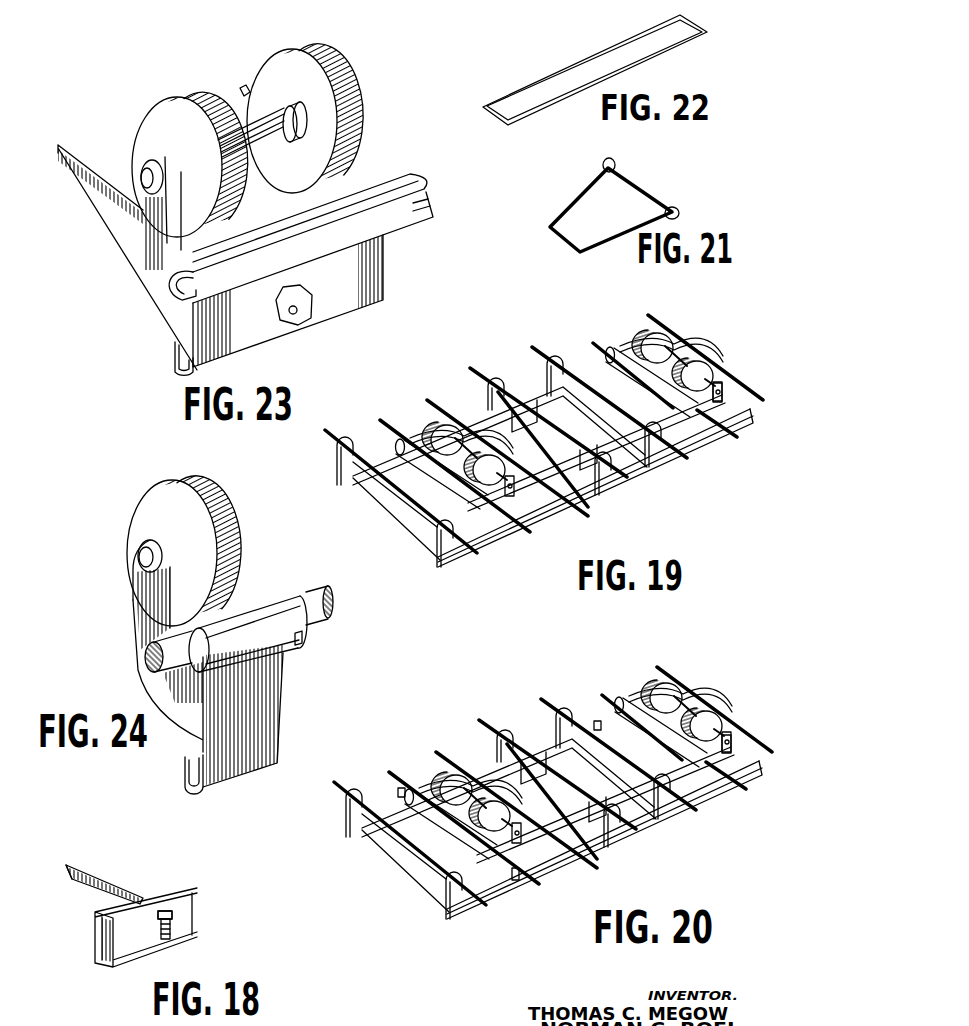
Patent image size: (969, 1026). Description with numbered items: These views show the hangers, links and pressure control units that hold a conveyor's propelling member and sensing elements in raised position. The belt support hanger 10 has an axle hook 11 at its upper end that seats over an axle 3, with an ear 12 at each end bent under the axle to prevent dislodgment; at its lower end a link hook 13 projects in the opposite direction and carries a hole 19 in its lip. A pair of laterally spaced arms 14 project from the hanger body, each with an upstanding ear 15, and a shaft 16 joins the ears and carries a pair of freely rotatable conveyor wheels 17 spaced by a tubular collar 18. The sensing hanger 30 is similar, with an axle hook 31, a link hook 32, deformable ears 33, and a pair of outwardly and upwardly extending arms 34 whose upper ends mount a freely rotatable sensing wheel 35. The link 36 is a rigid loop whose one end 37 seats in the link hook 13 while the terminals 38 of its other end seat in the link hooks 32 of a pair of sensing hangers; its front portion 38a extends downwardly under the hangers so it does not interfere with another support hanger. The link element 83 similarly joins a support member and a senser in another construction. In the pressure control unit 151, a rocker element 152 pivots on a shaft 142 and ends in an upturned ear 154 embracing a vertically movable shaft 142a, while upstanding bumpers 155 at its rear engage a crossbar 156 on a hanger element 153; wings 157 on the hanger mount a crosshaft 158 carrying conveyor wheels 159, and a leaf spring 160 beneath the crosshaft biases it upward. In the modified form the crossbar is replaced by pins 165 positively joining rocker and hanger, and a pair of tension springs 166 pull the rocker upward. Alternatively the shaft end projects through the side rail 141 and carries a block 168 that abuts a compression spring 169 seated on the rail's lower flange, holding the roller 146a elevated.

In FIG. 23, the support hanger 10 is at (170, 324).
In FIG. 23, the axle hook 11 is at (267, 233).
In FIG. 23, the ear 12 is at (188, 298).
In FIG. 23, the link hook 13 is at (178, 358).
In FIG. 23, the arm 14 is at (98, 208).
In FIG. 23, the upstanding ear 15 is at (162, 218).
In FIG. 23, the shaft 16 is at (137, 170).
In FIG. 23, the conveyor wheel 17 is at (202, 110).
In FIG. 23, the tubular collar 18 is at (273, 140).
In FIG. 23, the hole 19 is at (297, 313).
In FIG. 22, the link element 83 is at (570, 58).
In FIG. 21, the link 36 is at (573, 202).
In FIG. 21, the end 37 is at (550, 232).
In FIG. 21, the terminal 38 is at (612, 160).
In FIG. 21, the front portion 38a is at (633, 187).
In FIG. 24, the sensing hanger 30 is at (121, 625).
In FIG. 24, the axle hook 31 is at (270, 602).
In FIG. 24, the axle 3 is at (326, 612).
In FIG. 24, the deformable ear 33 is at (303, 638).
In FIG. 24, the arm 34 is at (140, 650).
In FIG. 24, the sensing wheel 35 is at (150, 493).
In FIG. 24, the link hook 32 is at (190, 790).
In FIG. 18, the side rail 141 is at (173, 892).
In FIG. 18, the roller 146a is at (123, 883).
In FIG. 18, the vertically movable shaft 142a is at (180, 913).
In FIG. 19, the vertically movable shaft 142a is at (475, 553).
In FIG. 20, the vertically movable shaft 142a is at (410, 819).
In FIG. 19, the shaft 142 is at (627, 477).
In FIG. 20, the shaft 142 is at (563, 793).
In FIG. 18, the block 168 is at (157, 918).
In FIG. 18, the compression spring 169 is at (178, 927).
In FIG. 19, the pressure control unit 151 is at (604, 502).
In FIG. 20, the pressure control unit 151 is at (560, 825).
In FIG. 19, the rocker element 152 is at (540, 512).
In FIG. 20, the rocker element 152 is at (604, 841).
In FIG. 19, the hanger element 153 is at (387, 447).
In FIG. 20, the hanger element 153 is at (604, 840).
In FIG. 19, the upturned ear 154 is at (437, 532).
In FIG. 19, the bumper 155 is at (605, 393).
In FIG. 19, the crossbar 156 is at (607, 385).
In FIG. 19, the wing 157 is at (733, 368).
In FIG. 20, the wing 157 is at (592, 781).
In FIG. 19, the crosshaft 158 is at (720, 353).
In FIG. 20, the crosshaft 158 is at (675, 712).
In FIG. 19, the conveyor wheel 159 is at (688, 345).
In FIG. 20, the conveyor wheel 159 is at (723, 707).
In FIG. 19, the leaf spring 160 is at (713, 340).
In FIG. 20, the pin 165 is at (482, 762).
In FIG. 20, the tension spring 166 is at (509, 904).